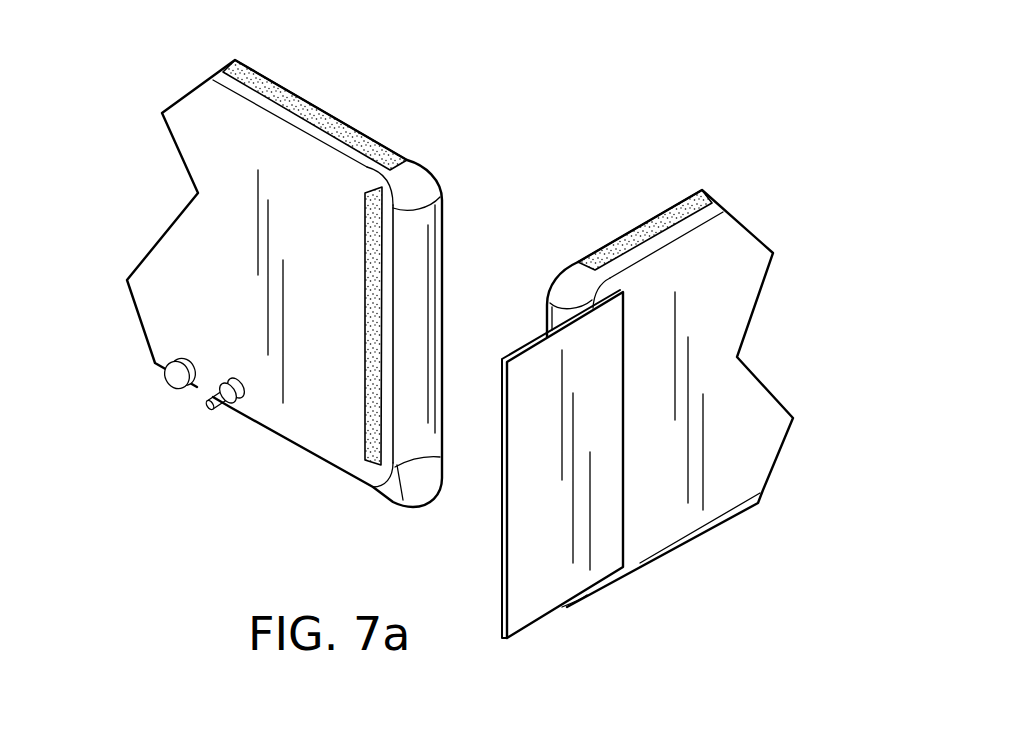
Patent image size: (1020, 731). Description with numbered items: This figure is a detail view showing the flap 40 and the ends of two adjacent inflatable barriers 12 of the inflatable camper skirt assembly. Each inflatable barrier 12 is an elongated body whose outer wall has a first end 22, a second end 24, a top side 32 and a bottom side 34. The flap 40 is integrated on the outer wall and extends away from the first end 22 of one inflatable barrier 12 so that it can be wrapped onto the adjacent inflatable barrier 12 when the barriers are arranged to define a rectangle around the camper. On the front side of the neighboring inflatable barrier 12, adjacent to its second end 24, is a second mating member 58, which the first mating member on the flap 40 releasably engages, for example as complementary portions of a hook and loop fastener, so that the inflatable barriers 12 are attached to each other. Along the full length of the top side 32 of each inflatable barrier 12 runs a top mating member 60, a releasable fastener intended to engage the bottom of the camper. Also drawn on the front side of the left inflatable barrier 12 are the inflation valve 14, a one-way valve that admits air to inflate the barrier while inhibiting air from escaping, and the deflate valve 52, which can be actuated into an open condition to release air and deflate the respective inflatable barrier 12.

The inflatable barrier 12 is at (280, 447).
The inflation valve 14 is at (225, 407).
The first end 22 is at (547, 303).
The second end 24 is at (430, 250).
The top side 32 is at (418, 170).
The bottom side 34 is at (375, 490).
The flap 40 is at (567, 545).
The deflate valve 52 is at (173, 377).
The second mating member 58 is at (380, 393).
The top mating member 60 is at (290, 100).